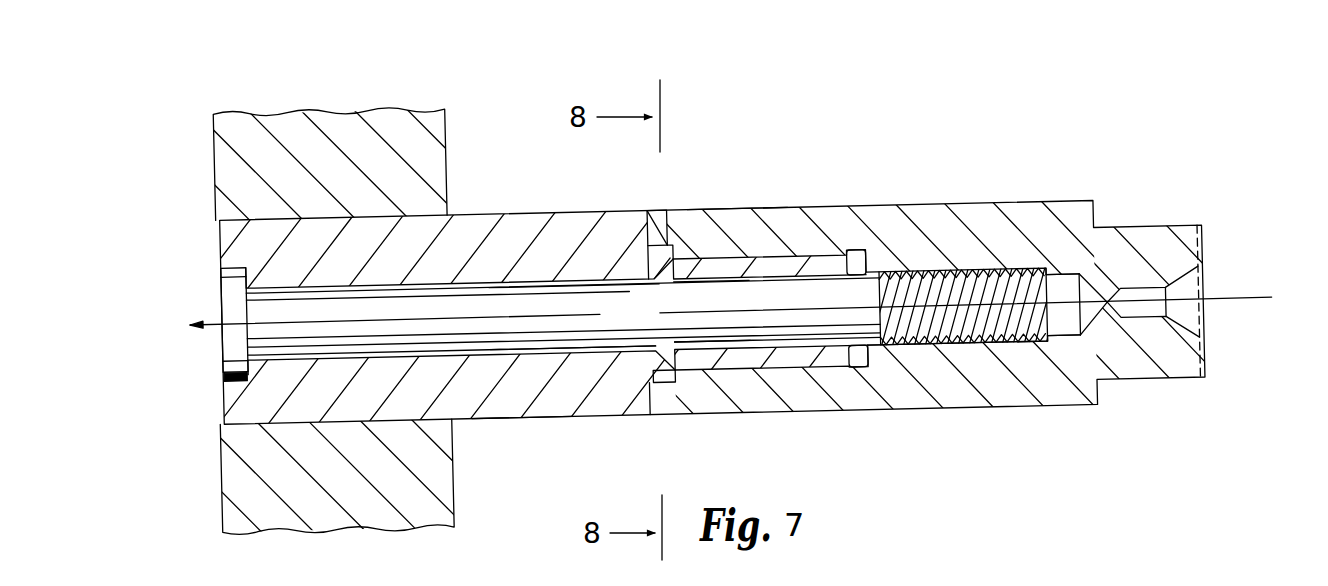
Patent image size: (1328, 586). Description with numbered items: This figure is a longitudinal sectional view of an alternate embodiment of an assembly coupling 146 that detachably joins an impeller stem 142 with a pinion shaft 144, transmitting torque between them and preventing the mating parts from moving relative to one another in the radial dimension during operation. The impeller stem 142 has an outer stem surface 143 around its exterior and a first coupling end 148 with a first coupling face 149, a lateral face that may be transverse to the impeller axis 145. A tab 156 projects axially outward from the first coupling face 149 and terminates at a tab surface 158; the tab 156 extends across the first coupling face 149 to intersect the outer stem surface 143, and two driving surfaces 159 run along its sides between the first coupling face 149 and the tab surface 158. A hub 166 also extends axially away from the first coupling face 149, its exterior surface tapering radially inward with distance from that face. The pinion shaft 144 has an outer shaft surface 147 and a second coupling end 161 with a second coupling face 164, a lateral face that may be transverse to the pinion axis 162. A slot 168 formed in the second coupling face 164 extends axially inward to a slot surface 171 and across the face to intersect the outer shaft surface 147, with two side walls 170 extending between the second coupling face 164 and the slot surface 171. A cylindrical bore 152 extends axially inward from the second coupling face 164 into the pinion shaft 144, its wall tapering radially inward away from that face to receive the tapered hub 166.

The impeller stem 142 is at (482, 211).
The outer stem surface 143 is at (523, 428).
The pinion shaft 144 is at (960, 201).
The impeller axis 145 is at (214, 324).
The assembly coupling 146 is at (690, 99).
The outer shaft surface 147 is at (915, 409).
The first coupling end 148 is at (604, 212).
The first coupling face 149 is at (662, 240).
The cylindrical bore 152 is at (765, 272).
The tab 156 is at (676, 248).
The tab surface 158 is at (715, 254).
The driving surfaces 159 is at (666, 240).
The second coupling end 161 is at (736, 212).
The pinion axis 162 is at (1215, 297).
The second coupling face 164 is at (571, 212).
The hub 166 is at (780, 369).
The slot 168 is at (638, 267).
The side walls 170 is at (598, 289).
The slot surface 171 is at (664, 322).